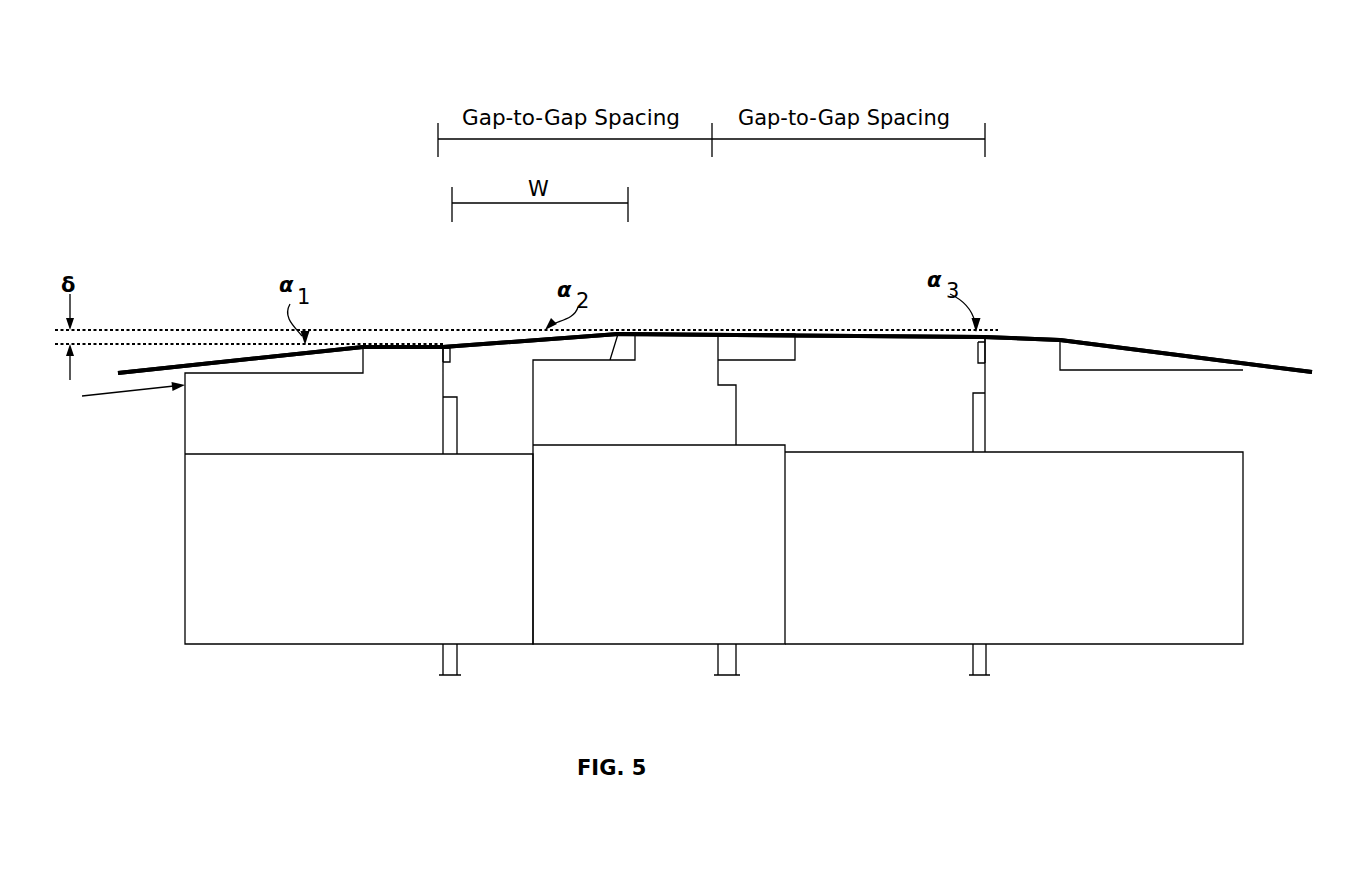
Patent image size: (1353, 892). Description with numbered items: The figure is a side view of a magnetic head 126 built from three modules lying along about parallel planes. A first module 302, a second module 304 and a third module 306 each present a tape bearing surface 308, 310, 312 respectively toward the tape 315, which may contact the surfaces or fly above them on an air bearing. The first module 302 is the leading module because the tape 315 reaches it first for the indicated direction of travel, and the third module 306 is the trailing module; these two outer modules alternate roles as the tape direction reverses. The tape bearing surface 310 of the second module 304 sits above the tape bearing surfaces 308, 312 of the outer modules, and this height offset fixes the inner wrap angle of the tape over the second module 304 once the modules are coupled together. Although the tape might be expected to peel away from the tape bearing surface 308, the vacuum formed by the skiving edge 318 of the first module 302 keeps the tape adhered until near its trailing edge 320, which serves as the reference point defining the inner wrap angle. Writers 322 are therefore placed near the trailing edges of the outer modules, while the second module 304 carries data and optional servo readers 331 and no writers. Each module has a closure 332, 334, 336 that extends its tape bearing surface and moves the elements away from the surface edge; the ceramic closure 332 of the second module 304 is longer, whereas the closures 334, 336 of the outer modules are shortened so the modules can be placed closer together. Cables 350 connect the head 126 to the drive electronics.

The magnetic head 126 is at (343, 208).
The first module 302 is at (185, 420).
The second module 304 is at (617, 346).
The third module 306 is at (1243, 418).
The tape bearing surface 308 is at (412, 332).
The tape bearing surface 310 is at (663, 320).
The tape bearing surface 312 is at (1020, 328).
The tape 315 is at (1113, 346).
The skiving edge 318 is at (351, 357).
The trailing edge 320 is at (462, 349).
The writers 322 is at (443, 331).
The data and optional servo readers 331 is at (718, 322).
The closure 332 is at (762, 362).
The closure 334 is at (450, 362).
The closure 336 is at (978, 355).
The cables 350 is at (460, 662).